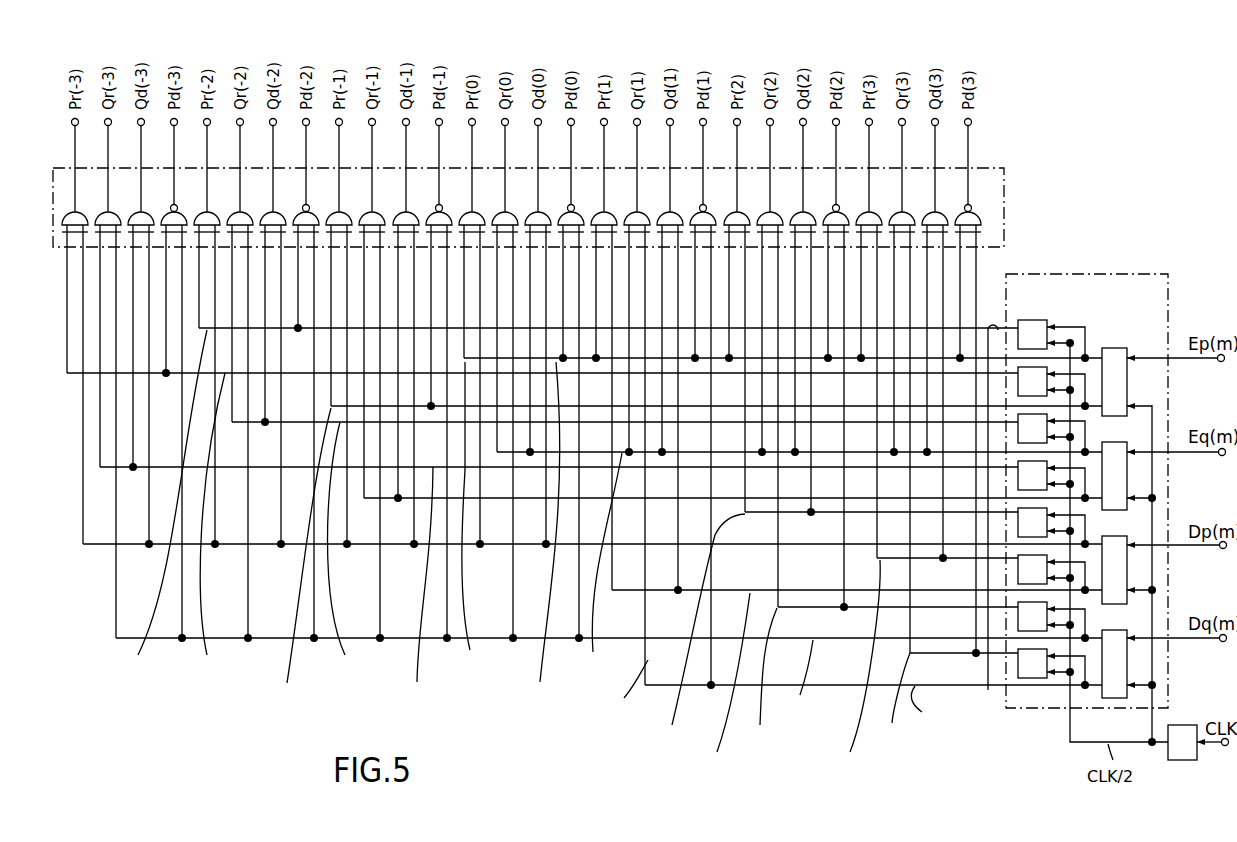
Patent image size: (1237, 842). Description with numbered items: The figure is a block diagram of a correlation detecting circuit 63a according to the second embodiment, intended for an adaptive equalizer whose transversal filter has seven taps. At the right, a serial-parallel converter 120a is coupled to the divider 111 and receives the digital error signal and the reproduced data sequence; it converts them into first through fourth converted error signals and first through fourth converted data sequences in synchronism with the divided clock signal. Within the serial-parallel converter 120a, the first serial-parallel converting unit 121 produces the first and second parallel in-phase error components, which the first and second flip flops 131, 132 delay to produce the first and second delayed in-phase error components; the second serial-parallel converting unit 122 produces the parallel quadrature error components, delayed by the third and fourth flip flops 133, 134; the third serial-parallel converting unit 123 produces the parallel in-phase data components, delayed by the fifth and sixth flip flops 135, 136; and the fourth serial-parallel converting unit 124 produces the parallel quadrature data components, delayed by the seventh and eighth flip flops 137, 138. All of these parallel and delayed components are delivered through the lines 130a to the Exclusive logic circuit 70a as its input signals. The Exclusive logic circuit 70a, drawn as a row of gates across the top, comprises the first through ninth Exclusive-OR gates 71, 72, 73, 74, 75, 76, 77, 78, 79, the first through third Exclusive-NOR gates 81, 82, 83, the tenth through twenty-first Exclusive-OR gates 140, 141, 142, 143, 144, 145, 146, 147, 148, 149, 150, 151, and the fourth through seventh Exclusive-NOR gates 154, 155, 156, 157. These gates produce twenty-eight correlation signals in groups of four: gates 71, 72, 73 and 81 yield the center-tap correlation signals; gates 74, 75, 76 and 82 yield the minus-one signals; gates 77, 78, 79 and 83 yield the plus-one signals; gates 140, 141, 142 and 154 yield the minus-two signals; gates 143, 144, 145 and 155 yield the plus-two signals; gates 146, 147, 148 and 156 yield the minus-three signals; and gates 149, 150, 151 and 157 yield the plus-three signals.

The sixteenth Exclusive-OR gate 146 is at (82, 212).
The seventeenth Exclusive-OR gate 147 is at (115, 212).
The eighteenth Exclusive-OR gate 148 is at (148, 212).
The sixth Exclusive-NOR gate 156 is at (181, 212).
The tenth Exclusive-OR gate 140 is at (214, 212).
The eleventh Exclusive-OR gate 141 is at (247, 212).
The twelfth Exclusive-OR gate 142 is at (280, 212).
The fourth Exclusive-NOR gate 154 is at (313, 212).
The fourth Exclusive-OR gate 74 is at (346, 212).
The fifth Exclusive-OR gate 75 is at (379, 212).
The sixth Exclusive-OR gate 76 is at (413, 212).
The second Exclusive-NOR gate 82 is at (446, 212).
The first Exclusive-OR gate 71 is at (479, 212).
The second Exclusive-OR gate 72 is at (512, 212).
The third Exclusive-OR gate 73 is at (545, 212).
The first Exclusive-NOR gate 81 is at (578, 212).
The seventh Exclusive-OR gate 77 is at (611, 212).
The eighth Exclusive-OR gate 78 is at (644, 212).
The ninth Exclusive-OR gate 79 is at (677, 212).
The third Exclusive-NOR gate 83 is at (710, 212).
The thirteenth Exclusive-OR gate 143 is at (744, 212).
The fourteenth Exclusive-OR gate 144 is at (777, 212).
The fifteenth Exclusive-OR gate 145 is at (810, 212).
The fifth Exclusive-NOR gate 155 is at (843, 212).
The nineteenth Exclusive-OR gate 149 is at (876, 212).
The twentieth Exclusive-OR gate 150 is at (909, 212).
The twenty-first Exclusive-OR gate 151 is at (942, 212).
The seventh Exclusive-NOR gate 157 is at (975, 212).
The Exclusive logic circuit 70a is at (1005, 212).
The correlation detecting circuit 63a is at (233, 712).
The serial-parallel converter 120a is at (1098, 275).
The lines 130a is at (988, 690).
The first flip flop 131 is at (1036, 320).
The second flip flop 132 is at (1017, 384).
The third flip flop 133 is at (1017, 430).
The fourth flip flop 134 is at (1018, 480).
The fifth flip flop 135 is at (1018, 525).
The sixth flip flop 136 is at (1018, 560).
The seventh flip flop 137 is at (1018, 617).
The eighth flip flop 138 is at (1018, 667).
The first serial-parallel converting unit 121 is at (1105, 348).
The second serial-parallel converting unit 122 is at (1105, 442).
The third serial-parallel converting unit 123 is at (1105, 537).
The fourth serial-parallel converting unit 124 is at (1105, 630).
The divider 111 is at (1175, 725).